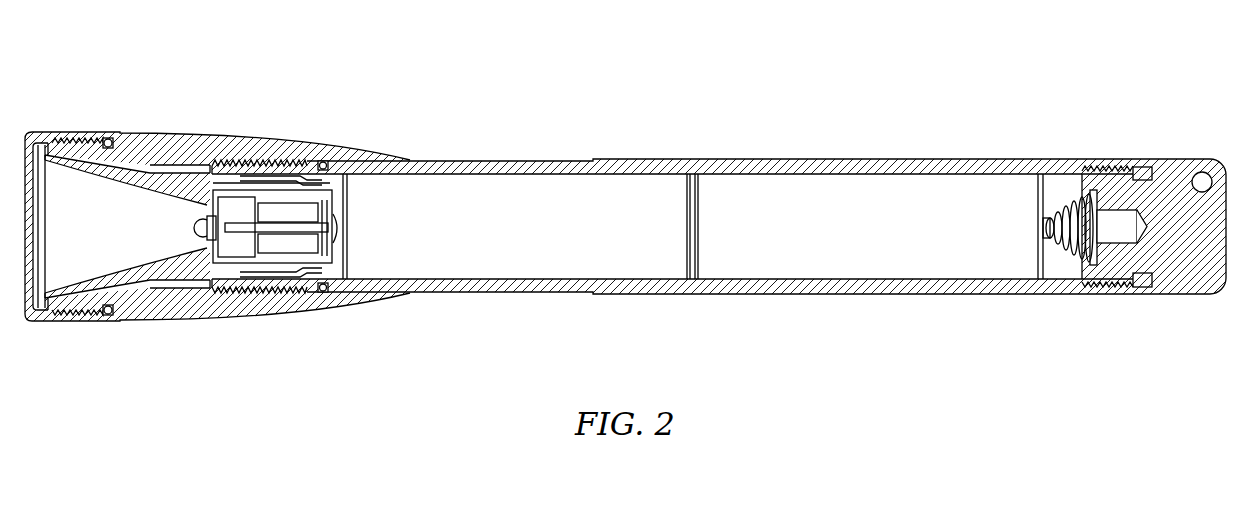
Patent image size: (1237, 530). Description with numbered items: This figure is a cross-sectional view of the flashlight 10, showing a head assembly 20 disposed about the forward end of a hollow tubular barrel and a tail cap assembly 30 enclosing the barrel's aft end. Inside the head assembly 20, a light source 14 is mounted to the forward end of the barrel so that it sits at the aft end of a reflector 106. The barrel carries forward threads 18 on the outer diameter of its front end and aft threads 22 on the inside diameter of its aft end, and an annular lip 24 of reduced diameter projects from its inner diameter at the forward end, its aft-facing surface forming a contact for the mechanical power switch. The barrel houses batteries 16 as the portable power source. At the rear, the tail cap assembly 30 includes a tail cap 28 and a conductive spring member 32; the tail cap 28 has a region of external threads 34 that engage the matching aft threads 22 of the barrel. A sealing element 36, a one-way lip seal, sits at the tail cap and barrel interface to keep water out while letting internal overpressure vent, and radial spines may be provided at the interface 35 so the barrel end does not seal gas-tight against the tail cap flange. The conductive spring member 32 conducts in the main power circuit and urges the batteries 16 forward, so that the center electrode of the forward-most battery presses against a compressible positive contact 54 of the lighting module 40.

The flashlight 10 is at (722, 62).
The light source 14 is at (198, 229).
The batteries 16 is at (512, 245).
The forward threads 18 is at (255, 160).
The head assembly 20 is at (211, 128).
The aft threads 22 is at (1085, 294).
The annular lip 24 is at (287, 173).
The tail cap 28 is at (1203, 294).
The tail cap assembly 30 is at (1191, 153).
The conductive spring member 32 is at (1048, 228).
The external threads 34 is at (1097, 167).
The interface 35 is at (1142, 288).
The sealing element 36 is at (1143, 166).
The lighting module 40 is at (307, 175).
The compressible positive contact 54 is at (335, 246).
The reflector 106 is at (165, 180).